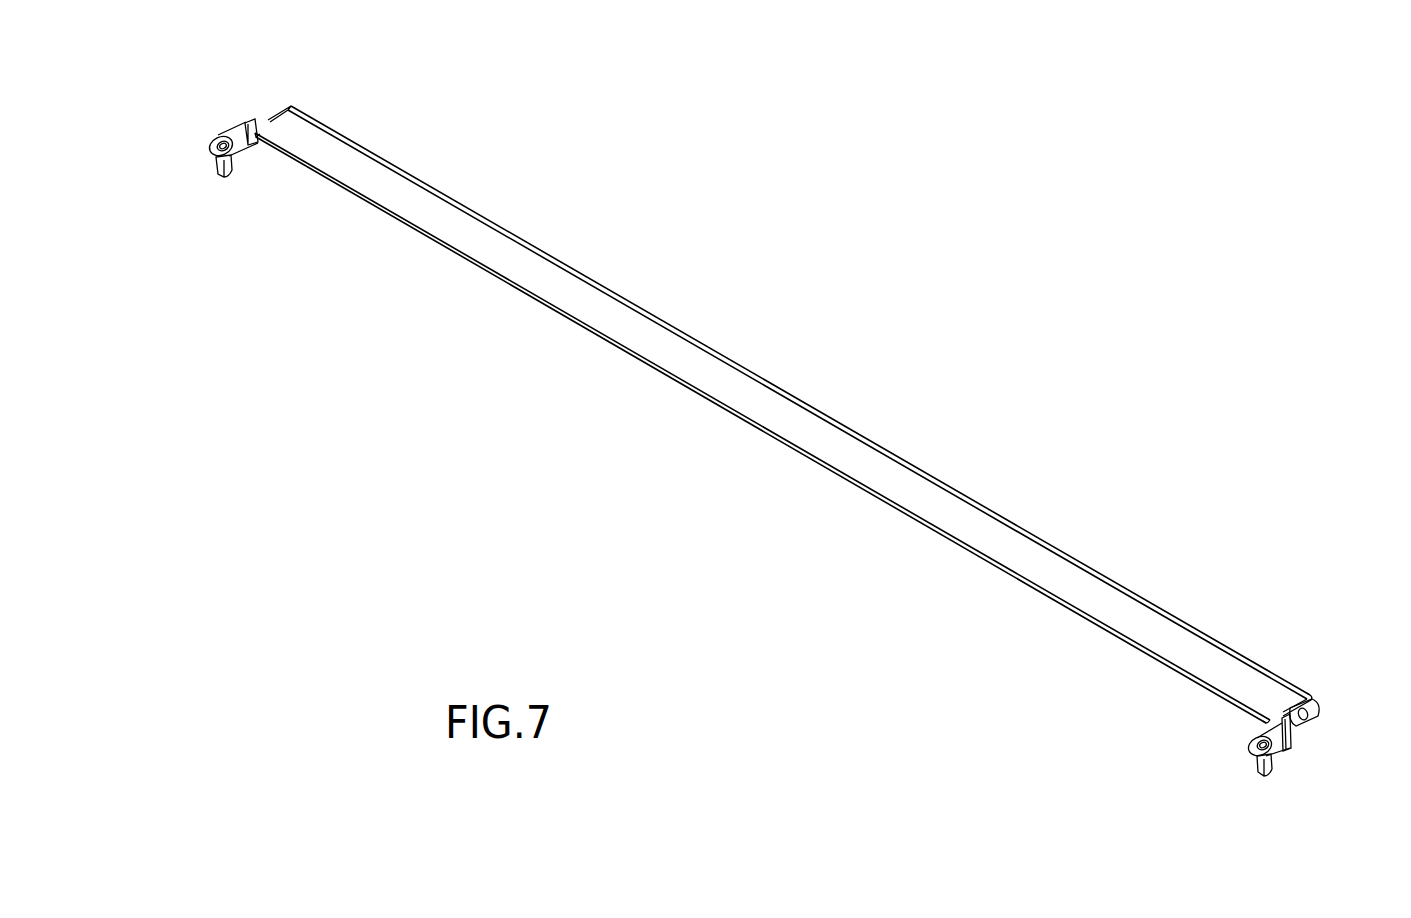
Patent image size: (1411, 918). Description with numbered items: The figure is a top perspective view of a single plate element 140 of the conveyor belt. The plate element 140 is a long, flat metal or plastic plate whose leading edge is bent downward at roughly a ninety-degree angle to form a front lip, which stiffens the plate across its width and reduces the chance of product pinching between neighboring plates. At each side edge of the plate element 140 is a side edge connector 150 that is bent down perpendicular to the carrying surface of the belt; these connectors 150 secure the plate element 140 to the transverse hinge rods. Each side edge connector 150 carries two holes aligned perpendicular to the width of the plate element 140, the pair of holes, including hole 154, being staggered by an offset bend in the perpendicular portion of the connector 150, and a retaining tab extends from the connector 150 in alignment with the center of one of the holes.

The plate element 140 is at (781, 410).
The side edge connector 150 is at (1302, 732).
The hole 154 is at (1295, 705).